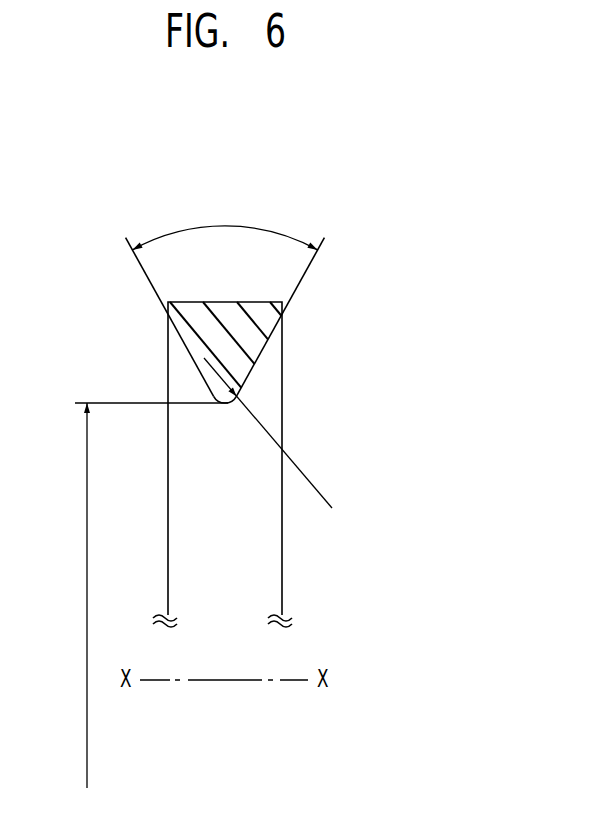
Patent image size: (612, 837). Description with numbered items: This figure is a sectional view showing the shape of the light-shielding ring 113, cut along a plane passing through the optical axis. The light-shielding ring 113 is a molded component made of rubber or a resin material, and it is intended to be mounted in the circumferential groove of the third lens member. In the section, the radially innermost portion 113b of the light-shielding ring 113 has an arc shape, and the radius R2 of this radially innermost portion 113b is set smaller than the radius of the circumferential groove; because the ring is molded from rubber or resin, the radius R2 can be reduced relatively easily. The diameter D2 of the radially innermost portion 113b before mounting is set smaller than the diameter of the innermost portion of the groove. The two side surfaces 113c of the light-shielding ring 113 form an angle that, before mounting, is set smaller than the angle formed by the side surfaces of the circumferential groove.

The light-shielding ring 113 is at (325, 171).
The radially innermost portion 113b is at (227, 404).
The side surfaces 113c is at (192, 357).
The radius R2 is at (279, 433).
The diameter D2 is at (141, 595).